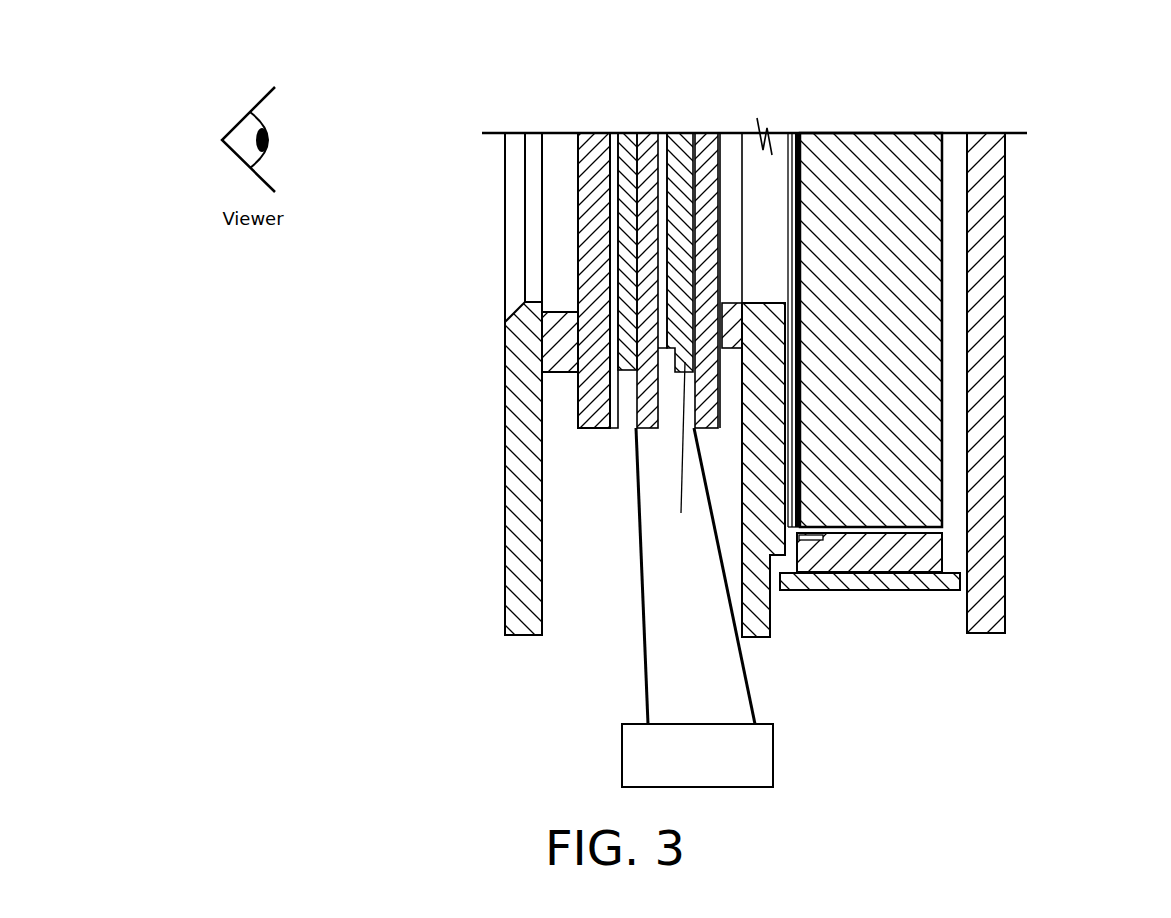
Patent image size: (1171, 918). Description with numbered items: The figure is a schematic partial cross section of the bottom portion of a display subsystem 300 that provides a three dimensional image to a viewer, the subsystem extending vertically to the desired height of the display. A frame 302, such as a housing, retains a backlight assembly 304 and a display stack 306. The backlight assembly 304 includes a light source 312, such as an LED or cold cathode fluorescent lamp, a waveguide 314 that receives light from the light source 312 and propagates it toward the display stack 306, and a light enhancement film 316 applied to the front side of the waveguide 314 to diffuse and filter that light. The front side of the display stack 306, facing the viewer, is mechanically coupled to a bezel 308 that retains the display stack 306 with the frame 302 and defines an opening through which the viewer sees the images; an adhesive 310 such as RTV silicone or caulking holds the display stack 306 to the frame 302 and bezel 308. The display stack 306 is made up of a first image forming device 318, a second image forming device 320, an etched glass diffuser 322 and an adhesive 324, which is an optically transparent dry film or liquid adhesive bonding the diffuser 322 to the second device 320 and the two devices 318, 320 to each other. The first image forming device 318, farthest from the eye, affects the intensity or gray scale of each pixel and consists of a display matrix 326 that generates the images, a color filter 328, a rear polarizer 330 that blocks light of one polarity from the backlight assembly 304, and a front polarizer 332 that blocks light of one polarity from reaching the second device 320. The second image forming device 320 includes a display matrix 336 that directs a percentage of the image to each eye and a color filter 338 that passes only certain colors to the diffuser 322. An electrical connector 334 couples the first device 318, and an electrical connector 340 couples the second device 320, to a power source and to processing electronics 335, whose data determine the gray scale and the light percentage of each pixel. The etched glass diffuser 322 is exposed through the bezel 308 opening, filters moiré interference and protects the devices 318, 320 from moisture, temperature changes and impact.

The display subsystem 300 is at (1045, 688).
The frame 302 is at (773, 637).
The backlight assembly 304 is at (958, 122).
The display stack 306 is at (727, 57).
The bezel 308 is at (507, 547).
The adhesive 310 is at (563, 312).
The light source 312 is at (887, 558).
The waveguide 314 is at (932, 318).
The light enhancement film 316 is at (787, 150).
The first image forming device 318 is at (724, 105).
The second image forming device 320 is at (660, 105).
The etched glass diffuser 322 is at (607, 428).
The adhesive 324 is at (615, 432).
The display matrix 326 is at (705, 418).
The color filter 328 is at (680, 452).
The rear polarizer 330 is at (722, 270).
The front polarizer 332 is at (670, 203).
The electrical connector 334 is at (720, 578).
The processing electronics 335 is at (744, 780).
The display matrix 336 is at (645, 422).
The color filter 338 is at (620, 188).
The electrical connector 340 is at (640, 613).